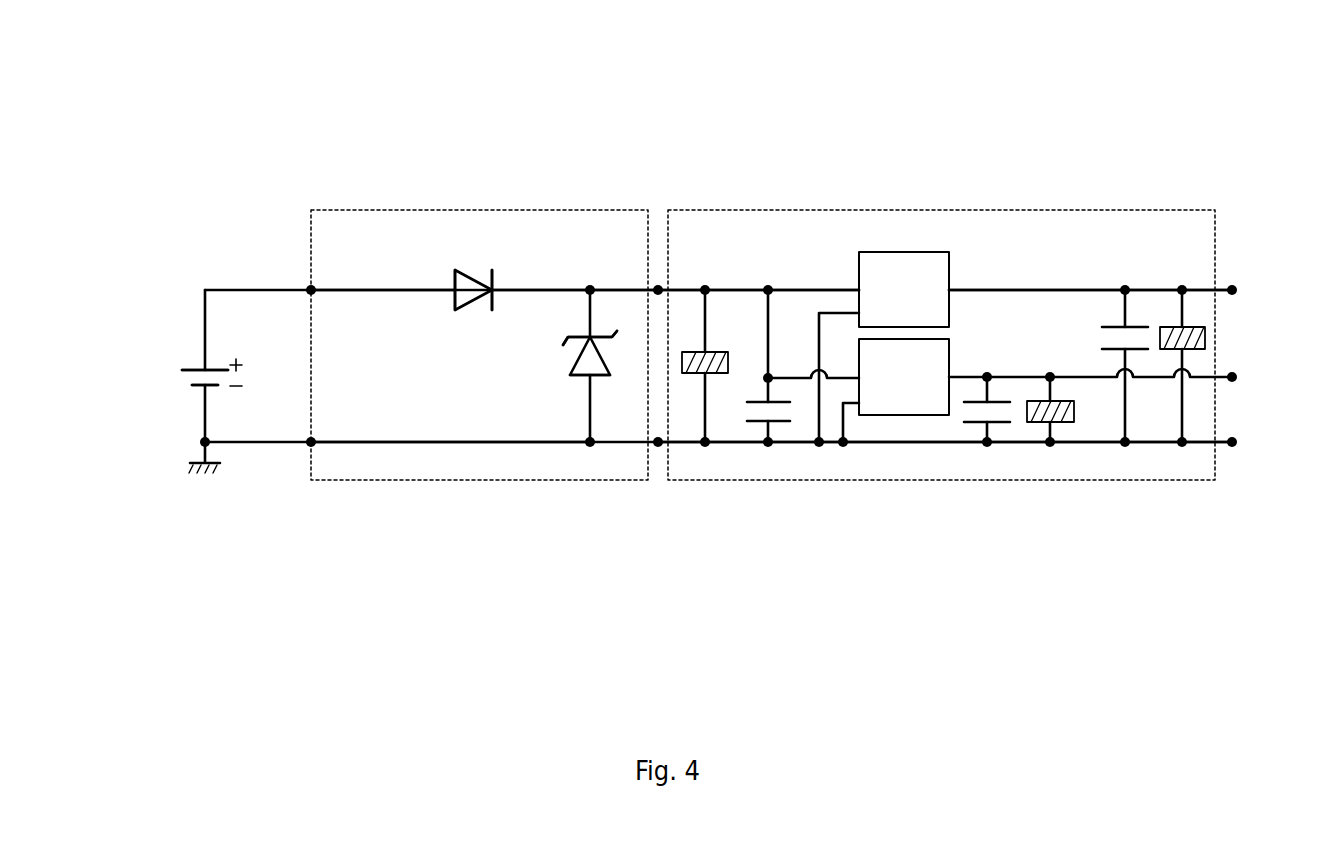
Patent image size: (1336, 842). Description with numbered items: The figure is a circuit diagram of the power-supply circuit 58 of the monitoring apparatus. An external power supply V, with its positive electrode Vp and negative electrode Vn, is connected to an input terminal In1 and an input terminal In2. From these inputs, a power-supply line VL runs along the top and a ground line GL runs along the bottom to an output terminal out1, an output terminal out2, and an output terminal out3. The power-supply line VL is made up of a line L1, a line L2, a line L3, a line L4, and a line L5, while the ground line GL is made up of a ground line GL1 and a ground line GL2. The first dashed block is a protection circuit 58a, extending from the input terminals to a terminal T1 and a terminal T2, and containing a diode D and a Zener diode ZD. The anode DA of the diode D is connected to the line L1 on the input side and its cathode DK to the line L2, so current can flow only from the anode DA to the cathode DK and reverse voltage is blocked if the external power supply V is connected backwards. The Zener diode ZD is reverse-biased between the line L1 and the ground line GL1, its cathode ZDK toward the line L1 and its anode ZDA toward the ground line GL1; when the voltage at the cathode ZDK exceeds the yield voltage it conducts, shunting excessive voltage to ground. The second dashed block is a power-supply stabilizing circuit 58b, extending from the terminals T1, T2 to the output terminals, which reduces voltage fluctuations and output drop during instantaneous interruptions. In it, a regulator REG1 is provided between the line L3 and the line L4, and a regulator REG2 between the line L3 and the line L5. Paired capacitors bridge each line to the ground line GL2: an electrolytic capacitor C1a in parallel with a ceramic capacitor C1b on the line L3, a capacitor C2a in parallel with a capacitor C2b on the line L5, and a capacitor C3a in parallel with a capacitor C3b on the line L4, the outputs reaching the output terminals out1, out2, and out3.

The power-supply circuit 58 is at (1070, 135).
The protection circuit 58a is at (563, 210).
The power-supply stabilizing circuit 58b is at (745, 210).
The external power supply V is at (205, 368).
The positive electrode Vp is at (205, 368).
The negative electrode Vn is at (205, 385).
The power-supply line VL is at (261, 285).
The ground line GL is at (248, 446).
The input terminal In1 is at (311, 290).
The input terminal In2 is at (311, 442).
The line L1 is at (405, 290).
The line L2 is at (545, 290).
The line L3 is at (738, 290).
The line L4 is at (1065, 290).
The line L5 is at (1025, 377).
The ground line GL1 is at (408, 445).
The ground line GL2 is at (910, 445).
The diode D is at (448, 288).
The anode DA is at (452, 293).
The cathode DK is at (490, 295).
The Zener diode ZD is at (578, 378).
The cathode ZDK is at (595, 335).
The anode ZDA is at (600, 378).
The terminal T1 is at (658, 290).
The terminal T2 is at (658, 445).
The regulator REG1 is at (878, 252).
The regulator REG2 is at (934, 339).
The capacitor C1a is at (718, 375).
The capacitor C1b is at (788, 422).
The capacitor C2a is at (1063, 425).
The capacitor C2b is at (998, 425).
The capacitor C3a is at (1198, 352).
The capacitor C3b is at (1138, 352).
The output terminal out1 is at (1264, 289).
The output terminal out2 is at (1264, 376).
The output terminal out3 is at (1264, 441).